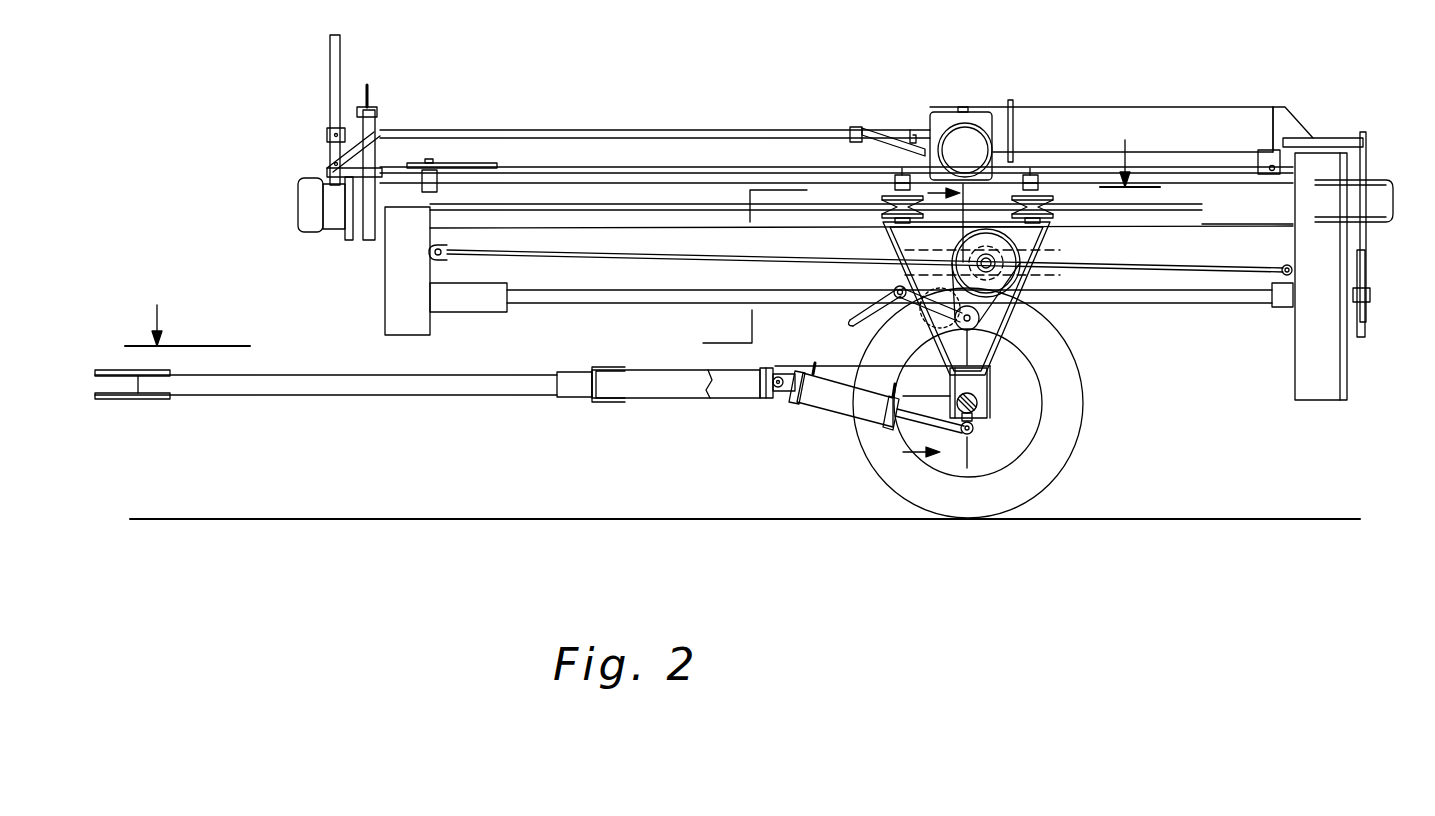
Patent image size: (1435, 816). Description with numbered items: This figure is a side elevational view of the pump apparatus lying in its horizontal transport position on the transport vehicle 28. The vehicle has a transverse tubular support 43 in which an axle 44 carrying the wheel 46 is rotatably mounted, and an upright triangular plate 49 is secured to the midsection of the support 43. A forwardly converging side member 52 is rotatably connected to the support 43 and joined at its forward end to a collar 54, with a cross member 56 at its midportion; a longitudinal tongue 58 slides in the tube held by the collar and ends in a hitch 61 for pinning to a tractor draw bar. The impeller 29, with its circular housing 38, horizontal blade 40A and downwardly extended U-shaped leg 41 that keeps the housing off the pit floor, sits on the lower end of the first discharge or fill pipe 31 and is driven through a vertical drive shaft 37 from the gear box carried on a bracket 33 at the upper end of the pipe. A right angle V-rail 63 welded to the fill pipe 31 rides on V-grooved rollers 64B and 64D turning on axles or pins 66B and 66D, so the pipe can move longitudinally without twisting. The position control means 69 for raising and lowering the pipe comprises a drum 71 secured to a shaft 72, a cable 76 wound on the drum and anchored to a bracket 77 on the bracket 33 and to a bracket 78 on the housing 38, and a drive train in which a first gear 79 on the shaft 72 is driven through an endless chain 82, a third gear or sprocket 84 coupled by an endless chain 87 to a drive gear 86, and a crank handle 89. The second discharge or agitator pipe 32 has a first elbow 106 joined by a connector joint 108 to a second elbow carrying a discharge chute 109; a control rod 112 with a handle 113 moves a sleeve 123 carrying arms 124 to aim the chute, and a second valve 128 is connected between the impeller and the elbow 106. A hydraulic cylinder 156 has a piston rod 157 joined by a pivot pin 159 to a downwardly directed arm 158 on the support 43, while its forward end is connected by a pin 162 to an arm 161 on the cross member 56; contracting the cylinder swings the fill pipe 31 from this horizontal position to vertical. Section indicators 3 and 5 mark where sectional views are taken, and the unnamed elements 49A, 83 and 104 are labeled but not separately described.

The section line 3- 3 is at (642, 232).
The section line 5- 5 is at (954, 324).
The transport vehicle 28 is at (762, 434).
The impeller 29 is at (1258, 367).
The first discharge pipe 31 is at (636, 222).
The second discharge pipe 32 is at (1120, 98).
The bracket 33 is at (396, 280).
The vertical drive shaft 37 is at (1187, 298).
The housing 38 is at (1325, 390).
The horizontal blade 40A is at (1368, 325).
The U-shaped leg 41 is at (1393, 200).
The transverse tubular support 43 is at (989, 392).
The axle 44 is at (978, 404).
The wheel 46 is at (1056, 438).
The triangular plate 49 is at (836, 244).
The triangular support plate 49A is at (946, 224).
The side member 52 is at (668, 386).
The collar 54 is at (606, 404).
The cross member 56 is at (766, 370).
The tongue 58 is at (248, 386).
The hitch 61 is at (124, 399).
The V-rail 63 is at (690, 211).
The roller 64B is at (1052, 215).
The roller 64D is at (886, 214).
The axle 66B is at (1033, 178).
The axle 66D is at (897, 180).
The position control means 69 is at (844, 326).
The drum 71 is at (1000, 252).
The shaft 72 is at (1020, 262).
The cable 76 is at (716, 254).
The anchor bracket 77 is at (448, 256).
The anchor bracket 78 is at (1282, 266).
The first gear 79 is at (1010, 256).
The endless chain 82 is at (950, 265).
The shaft 83 is at (970, 345).
The third gear 84 is at (988, 324).
The drive gear 86 is at (901, 300).
The endless chain 87 is at (915, 333).
The crank handle 89 is at (848, 312).
The front bracket assembly 104 is at (318, 146).
The first elbow 106 is at (1298, 122).
The connector joint 108 is at (1012, 100).
The discharge chute 109 is at (965, 113).
The control rod 112 is at (637, 130).
The handle 113 is at (330, 50).
The sleeve 123 is at (855, 128).
The arms 124 is at (890, 130).
The second valve 128 is at (1352, 132).
The hydraulic cylinder 156 is at (843, 404).
The piston rod 157 is at (897, 452).
The arm 158 is at (975, 426).
The pivot pin 159 is at (975, 440).
The arm 161 is at (766, 386).
The pin 162 is at (780, 376).